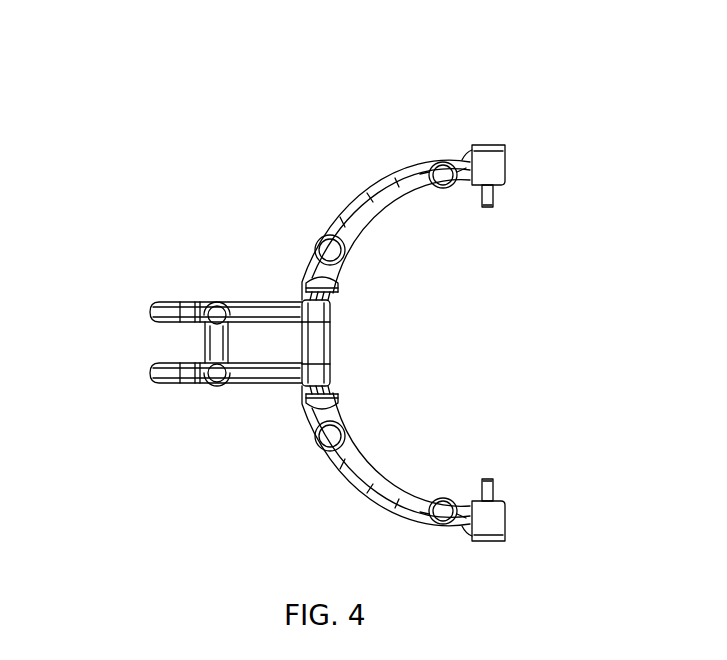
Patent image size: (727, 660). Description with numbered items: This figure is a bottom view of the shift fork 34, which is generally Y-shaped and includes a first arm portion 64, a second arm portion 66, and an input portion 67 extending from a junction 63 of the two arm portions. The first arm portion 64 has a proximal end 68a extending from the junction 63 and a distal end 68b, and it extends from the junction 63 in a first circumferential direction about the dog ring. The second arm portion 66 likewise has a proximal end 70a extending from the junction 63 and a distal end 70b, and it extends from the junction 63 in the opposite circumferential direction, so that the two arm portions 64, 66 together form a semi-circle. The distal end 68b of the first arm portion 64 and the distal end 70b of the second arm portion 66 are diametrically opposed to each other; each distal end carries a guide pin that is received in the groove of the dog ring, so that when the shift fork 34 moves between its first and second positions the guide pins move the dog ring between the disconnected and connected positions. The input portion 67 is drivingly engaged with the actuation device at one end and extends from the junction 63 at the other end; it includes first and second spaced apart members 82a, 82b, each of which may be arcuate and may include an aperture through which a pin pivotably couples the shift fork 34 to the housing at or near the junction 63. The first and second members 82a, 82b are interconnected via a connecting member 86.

The shift fork 34 is at (232, 145).
The junction 63 is at (316, 342).
The first arm portion 64 is at (343, 461).
The second arm portion 66 is at (378, 202).
The input portion 67 is at (221, 287).
The proximal end 68a is at (336, 398).
The distal end 68b is at (498, 528).
The proximal end 70a is at (336, 288).
The distal end 70b is at (498, 160).
The first member 82a is at (214, 392).
The second member 82b is at (247, 302).
The connecting member 86 is at (212, 345).